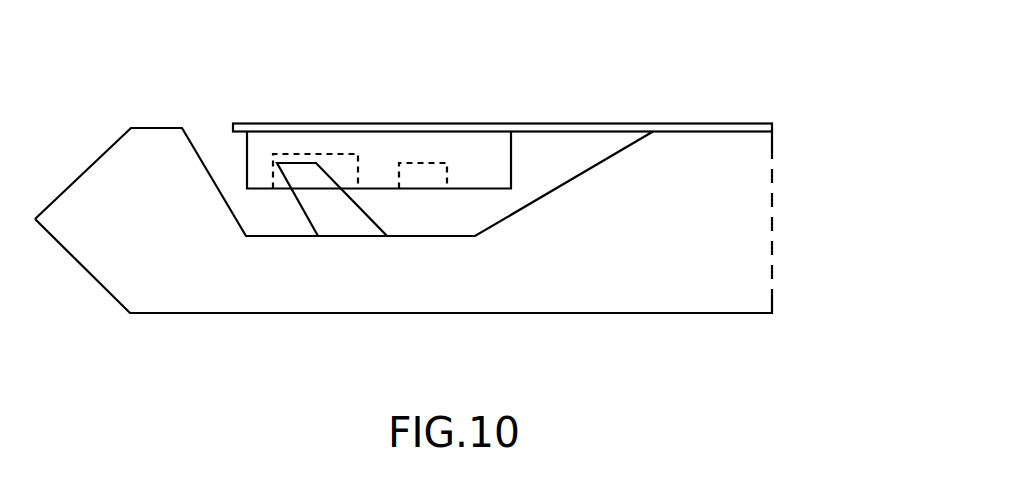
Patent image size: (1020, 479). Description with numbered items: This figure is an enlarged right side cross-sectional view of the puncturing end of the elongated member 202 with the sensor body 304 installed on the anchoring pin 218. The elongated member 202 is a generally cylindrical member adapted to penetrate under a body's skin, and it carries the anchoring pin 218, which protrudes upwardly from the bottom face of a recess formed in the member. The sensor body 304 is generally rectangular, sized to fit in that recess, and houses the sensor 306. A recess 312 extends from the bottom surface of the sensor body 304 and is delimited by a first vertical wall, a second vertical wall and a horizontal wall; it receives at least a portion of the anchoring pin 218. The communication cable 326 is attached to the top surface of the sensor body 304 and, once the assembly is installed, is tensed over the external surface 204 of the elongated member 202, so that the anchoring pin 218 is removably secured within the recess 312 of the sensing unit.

The elongated member 202 is at (733, 235).
The external surface 204 is at (733, 134).
The communication cable 326 is at (676, 122).
The sensor body 304 is at (514, 157).
The sensor 306 is at (447, 163).
The recess 312 is at (343, 168).
The anchoring pin 218 is at (336, 212).